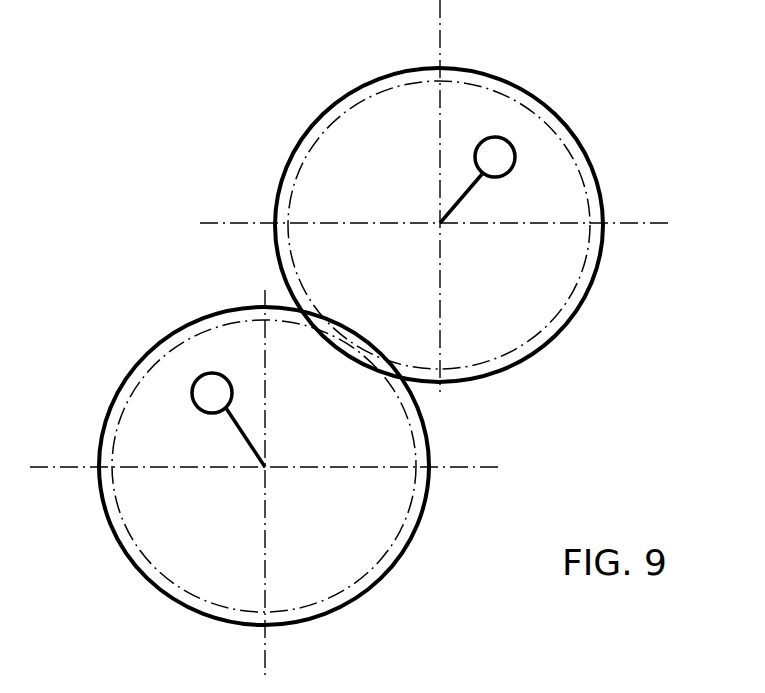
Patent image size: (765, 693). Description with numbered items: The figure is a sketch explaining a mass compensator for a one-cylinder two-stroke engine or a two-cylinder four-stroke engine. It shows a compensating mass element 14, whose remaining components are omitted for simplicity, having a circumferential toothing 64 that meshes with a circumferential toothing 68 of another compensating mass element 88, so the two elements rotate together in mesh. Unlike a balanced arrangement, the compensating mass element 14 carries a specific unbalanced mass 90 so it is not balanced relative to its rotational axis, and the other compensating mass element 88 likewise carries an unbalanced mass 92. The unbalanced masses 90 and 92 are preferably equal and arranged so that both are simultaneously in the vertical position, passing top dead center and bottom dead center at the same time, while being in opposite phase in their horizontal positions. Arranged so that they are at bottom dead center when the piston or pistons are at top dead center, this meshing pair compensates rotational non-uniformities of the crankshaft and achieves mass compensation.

The compensating mass element 14 is at (385, 537).
The circumferential toothing 64 is at (417, 502).
The circumferential toothing 68 is at (565, 291).
The compensating mass element 88 is at (562, 201).
The unbalanced mass 90 is at (207, 390).
The unbalanced mass 92 is at (498, 157).